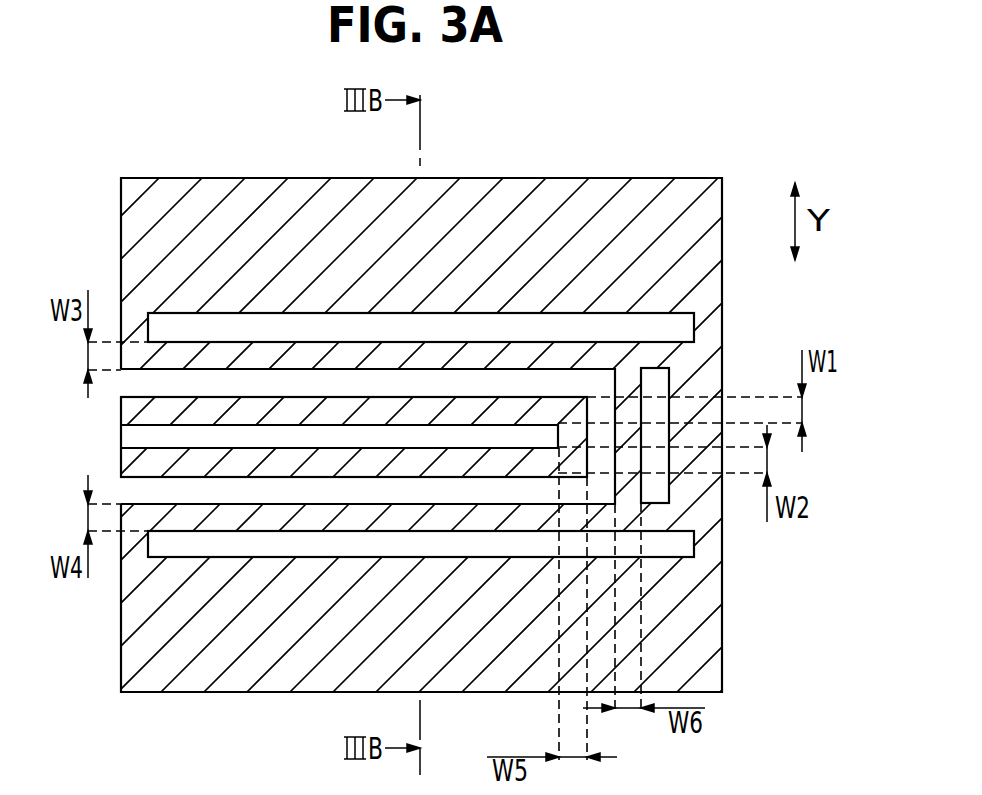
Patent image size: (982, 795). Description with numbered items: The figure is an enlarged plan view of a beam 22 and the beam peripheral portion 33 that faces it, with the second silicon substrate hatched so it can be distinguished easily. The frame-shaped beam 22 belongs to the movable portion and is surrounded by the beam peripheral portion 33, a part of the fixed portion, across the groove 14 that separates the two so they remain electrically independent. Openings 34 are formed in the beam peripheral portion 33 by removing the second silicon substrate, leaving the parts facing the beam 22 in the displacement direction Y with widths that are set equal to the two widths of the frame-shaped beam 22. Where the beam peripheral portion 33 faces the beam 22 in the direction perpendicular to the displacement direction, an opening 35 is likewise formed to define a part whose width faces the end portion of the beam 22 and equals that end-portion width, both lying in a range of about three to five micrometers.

The groove 14 is at (530, 382).
The beam 22 is at (215, 397).
The beam peripheral portion 33 is at (490, 183).
The openings 34 is at (320, 330).
The opening 35 is at (658, 379).